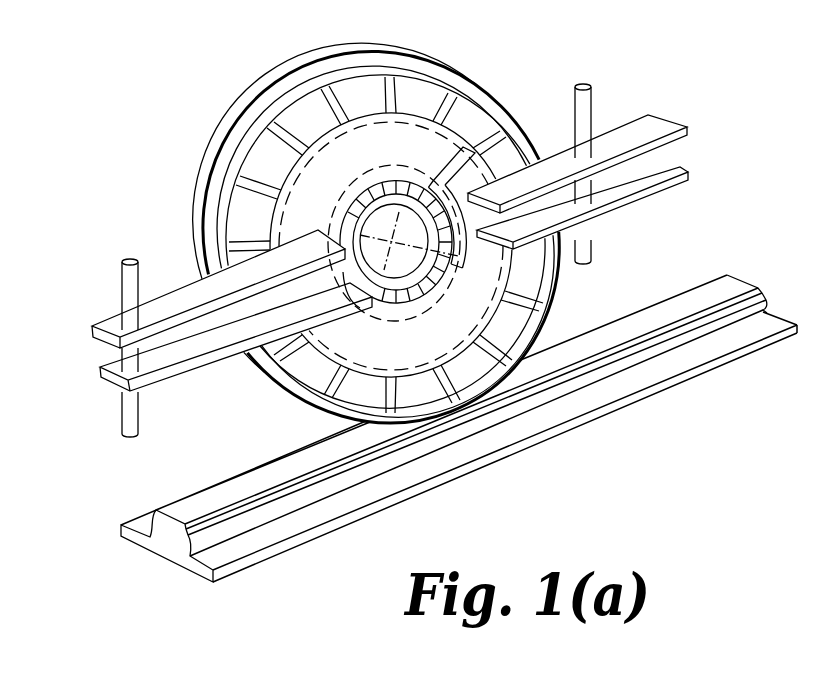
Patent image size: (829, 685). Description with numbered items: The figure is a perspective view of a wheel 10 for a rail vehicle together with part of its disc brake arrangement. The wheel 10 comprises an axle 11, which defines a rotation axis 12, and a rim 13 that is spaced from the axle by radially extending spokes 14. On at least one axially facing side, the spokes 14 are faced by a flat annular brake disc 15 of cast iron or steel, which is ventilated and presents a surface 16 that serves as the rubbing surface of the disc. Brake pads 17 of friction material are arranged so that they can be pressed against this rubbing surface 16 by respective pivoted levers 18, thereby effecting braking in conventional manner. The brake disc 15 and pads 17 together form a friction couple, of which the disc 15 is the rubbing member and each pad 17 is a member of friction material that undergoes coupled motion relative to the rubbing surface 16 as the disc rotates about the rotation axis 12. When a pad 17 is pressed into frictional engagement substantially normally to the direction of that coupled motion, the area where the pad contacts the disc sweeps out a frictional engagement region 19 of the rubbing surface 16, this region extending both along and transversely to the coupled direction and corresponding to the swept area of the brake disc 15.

The wheel 10 is at (163, 141).
The axle 11 is at (368, 262).
The rotation axis 12 is at (452, 252).
The rim 13 is at (478, 94).
The spokes 14 is at (437, 103).
The brake disc 15 is at (316, 132).
The rubbing surface 16 is at (354, 134).
The brake pads 17 is at (248, 226).
The pivoted levers 18 is at (108, 325).
The frictional engagement region 19 is at (445, 318).